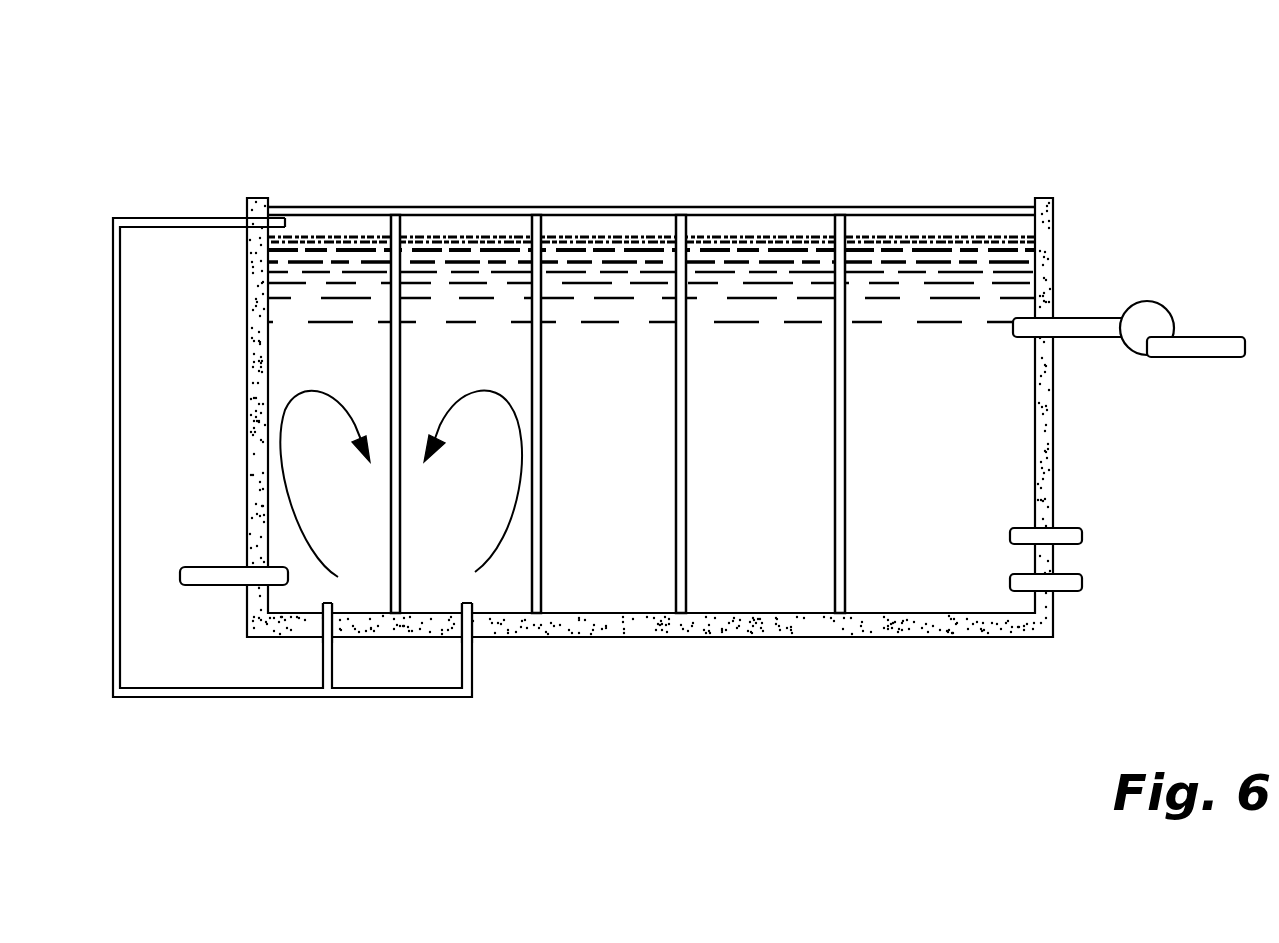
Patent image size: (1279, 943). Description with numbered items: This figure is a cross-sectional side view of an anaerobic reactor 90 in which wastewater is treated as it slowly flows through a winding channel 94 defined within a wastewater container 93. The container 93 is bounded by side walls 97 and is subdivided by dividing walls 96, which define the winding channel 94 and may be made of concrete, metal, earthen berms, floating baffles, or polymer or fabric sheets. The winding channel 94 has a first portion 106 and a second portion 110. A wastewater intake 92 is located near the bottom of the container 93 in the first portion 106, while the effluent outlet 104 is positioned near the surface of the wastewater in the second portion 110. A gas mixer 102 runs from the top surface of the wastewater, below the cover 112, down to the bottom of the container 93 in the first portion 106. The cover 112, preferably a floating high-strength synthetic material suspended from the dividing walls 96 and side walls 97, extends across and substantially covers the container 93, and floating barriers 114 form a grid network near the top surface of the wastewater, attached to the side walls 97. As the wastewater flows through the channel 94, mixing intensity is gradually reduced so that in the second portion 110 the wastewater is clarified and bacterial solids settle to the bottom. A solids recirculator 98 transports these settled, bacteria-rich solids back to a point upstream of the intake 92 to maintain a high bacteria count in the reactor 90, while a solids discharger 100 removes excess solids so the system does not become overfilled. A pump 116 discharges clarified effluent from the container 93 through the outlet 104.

The anaerobic reactor 90 is at (232, 100).
The wastewater intake 92 is at (240, 572).
The wastewater container 93 is at (1052, 445).
The winding channel 94 is at (295, 308).
The dividing walls 96 is at (401, 350).
The side walls 97 is at (258, 433).
The solids recirculator 98 is at (1062, 528).
The solids discharger 100 is at (1062, 593).
The gas mixer 102 is at (280, 698).
The effluent outlet 104 is at (1055, 327).
The first portion 106 is at (292, 357).
The second portion 110 is at (940, 580).
The cover 112 is at (916, 207).
The floating barriers 114 is at (980, 227).
The pump 116 is at (1158, 350).